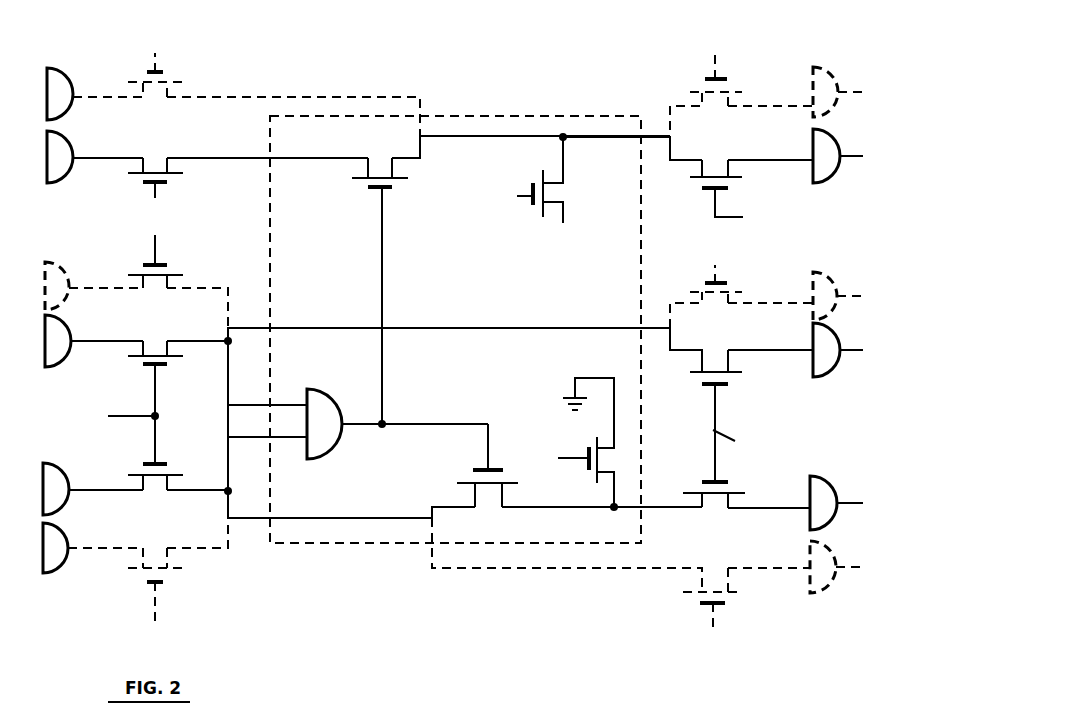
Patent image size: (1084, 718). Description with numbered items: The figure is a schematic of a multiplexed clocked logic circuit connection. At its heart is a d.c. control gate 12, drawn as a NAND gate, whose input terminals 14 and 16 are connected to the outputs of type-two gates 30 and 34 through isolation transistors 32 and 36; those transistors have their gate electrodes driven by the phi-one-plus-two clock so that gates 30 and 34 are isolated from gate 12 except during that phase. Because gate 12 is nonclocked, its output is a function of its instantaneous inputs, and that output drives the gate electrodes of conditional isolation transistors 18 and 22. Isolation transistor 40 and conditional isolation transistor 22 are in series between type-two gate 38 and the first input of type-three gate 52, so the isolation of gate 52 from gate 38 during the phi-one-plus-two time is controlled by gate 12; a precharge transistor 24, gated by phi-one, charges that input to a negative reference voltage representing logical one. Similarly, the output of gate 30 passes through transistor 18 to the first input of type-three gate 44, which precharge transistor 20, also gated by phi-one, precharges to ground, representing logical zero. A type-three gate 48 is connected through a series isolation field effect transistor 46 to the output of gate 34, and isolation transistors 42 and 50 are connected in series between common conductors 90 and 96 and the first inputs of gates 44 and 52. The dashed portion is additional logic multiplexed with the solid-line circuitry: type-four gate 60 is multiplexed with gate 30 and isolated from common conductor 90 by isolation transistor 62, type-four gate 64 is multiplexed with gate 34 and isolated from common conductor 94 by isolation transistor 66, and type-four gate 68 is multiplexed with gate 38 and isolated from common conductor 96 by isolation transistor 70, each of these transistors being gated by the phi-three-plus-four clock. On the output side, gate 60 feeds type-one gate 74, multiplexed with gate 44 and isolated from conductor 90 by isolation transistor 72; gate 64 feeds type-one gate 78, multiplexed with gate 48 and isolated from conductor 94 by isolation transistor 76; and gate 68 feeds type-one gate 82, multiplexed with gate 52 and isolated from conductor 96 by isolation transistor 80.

The d.c. control gate 12 is at (332, 434).
The input terminal 14 is at (292, 440).
The input terminal 16 is at (290, 403).
The conditional isolation transistor 18 is at (465, 478).
The precharge transistor 20 is at (592, 440).
The conditional isolation transistor 22 is at (362, 178).
The precharge transistor 24 is at (533, 193).
The type-two gate 30 is at (66, 500).
The isolation transistor 32 is at (168, 472).
The type-two gate 34 is at (68, 352).
The isolation transistor 36 is at (160, 366).
The type-two gate 38 is at (70, 168).
The isolation transistor 40 is at (167, 182).
The isolation transistor 42 is at (700, 492).
The type-three gate 44 is at (832, 492).
The series isolation field effect transistor 46 is at (725, 380).
The type-three gate 48 is at (830, 358).
The isolation transistor 50 is at (705, 182).
The type-three gate 52 is at (830, 173).
The type-four gate 60 is at (66, 558).
The isolation transistor 62 is at (166, 582).
The type-four gate 64 is at (65, 262).
The isolation transistor 66 is at (170, 272).
The type-four gate 68 is at (60, 90).
The isolation transistor 70 is at (168, 73).
The isolation transistor 72 is at (696, 600).
The type-one gate 74 is at (830, 580).
The isolation transistor 76 is at (700, 287).
The type-one gate 78 is at (845, 294).
The isolation transistor 80 is at (700, 85).
The type-one gate 82 is at (845, 92).
The common conductor 90 is at (305, 518).
The common conductor 94 is at (465, 330).
The common conductor 96 is at (480, 138).